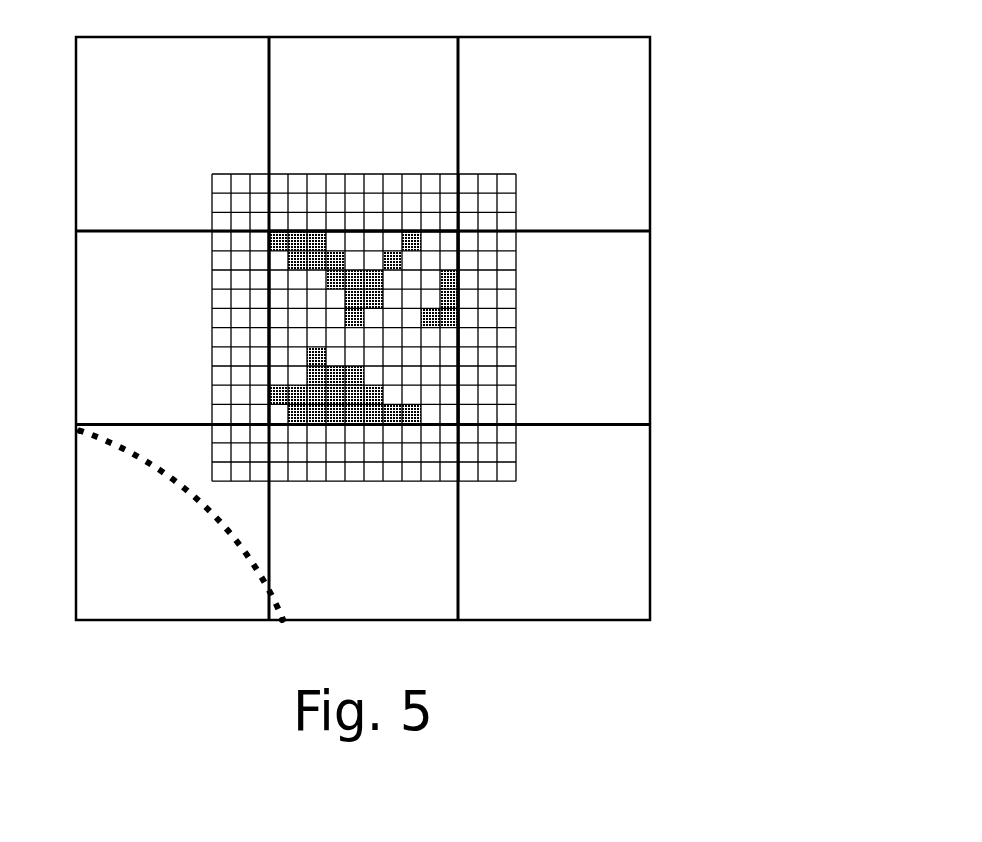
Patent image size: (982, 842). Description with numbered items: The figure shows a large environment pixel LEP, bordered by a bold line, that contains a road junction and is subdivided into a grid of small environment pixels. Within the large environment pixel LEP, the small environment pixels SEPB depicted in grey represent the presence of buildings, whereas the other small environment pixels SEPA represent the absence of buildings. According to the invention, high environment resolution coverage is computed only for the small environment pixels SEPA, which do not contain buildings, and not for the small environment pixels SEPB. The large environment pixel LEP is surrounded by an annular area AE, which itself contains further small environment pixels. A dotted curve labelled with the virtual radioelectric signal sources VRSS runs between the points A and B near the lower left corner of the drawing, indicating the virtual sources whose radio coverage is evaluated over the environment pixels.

The annular area AE is at (518, 222).
The large environment pixel LEP is at (462, 341).
The small environment pixels representing absence of buildings SEPA is at (431, 377).
The small environment pixels representing presence of buildings SEPB is at (413, 415).
The virtual radioelectric signal sources VRSS is at (181, 526).
The start point of scan segment A is at (70, 431).
The end point of scan segment B is at (289, 638).